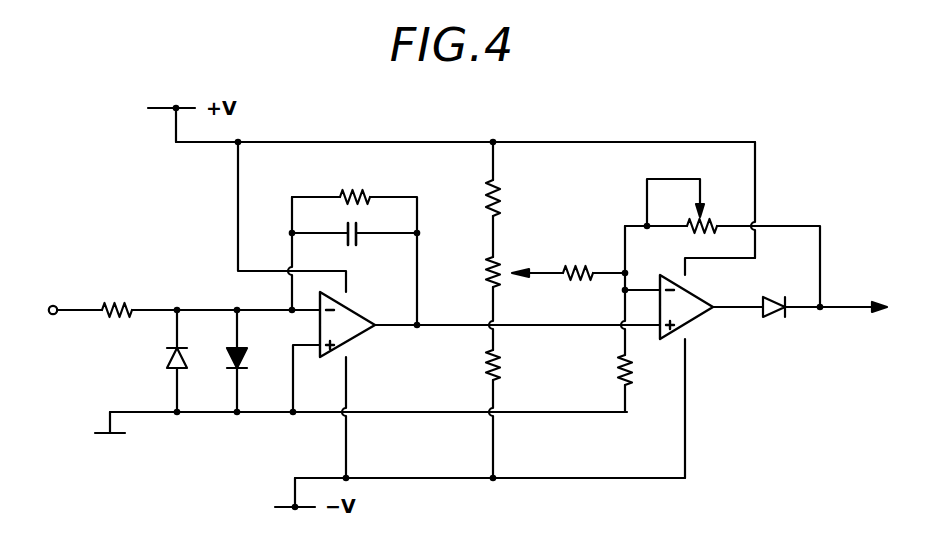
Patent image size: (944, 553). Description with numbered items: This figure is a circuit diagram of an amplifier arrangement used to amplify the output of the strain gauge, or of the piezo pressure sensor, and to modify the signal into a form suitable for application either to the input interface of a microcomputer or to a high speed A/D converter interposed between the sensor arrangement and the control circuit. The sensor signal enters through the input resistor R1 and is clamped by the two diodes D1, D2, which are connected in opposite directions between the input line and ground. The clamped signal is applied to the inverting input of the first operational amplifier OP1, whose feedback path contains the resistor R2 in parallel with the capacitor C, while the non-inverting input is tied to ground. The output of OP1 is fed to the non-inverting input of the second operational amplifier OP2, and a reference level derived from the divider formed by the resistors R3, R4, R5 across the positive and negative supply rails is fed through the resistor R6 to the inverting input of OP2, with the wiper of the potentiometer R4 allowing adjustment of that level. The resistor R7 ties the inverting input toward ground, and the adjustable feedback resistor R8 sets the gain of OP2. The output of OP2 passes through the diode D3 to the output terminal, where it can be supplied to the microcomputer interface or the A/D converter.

The input resistor R1 is at (117, 296).
The feedback resistor R2 is at (355, 182).
The resistor R3 is at (474, 198).
The potentiometer R4 is at (474, 272).
The resistor R5 is at (475, 367).
The resistor R6 is at (577, 257).
The resistor R7 is at (607, 370).
The feedback potentiometer R8 is at (709, 210).
The feedback capacitor C is at (362, 243).
The clamping diode D1 is at (159, 361).
The clamping diode D2 is at (255, 361).
The output diode D3 is at (774, 323).
The operational amplifier OP1 is at (364, 337).
The operational amplifier OP2 is at (706, 314).